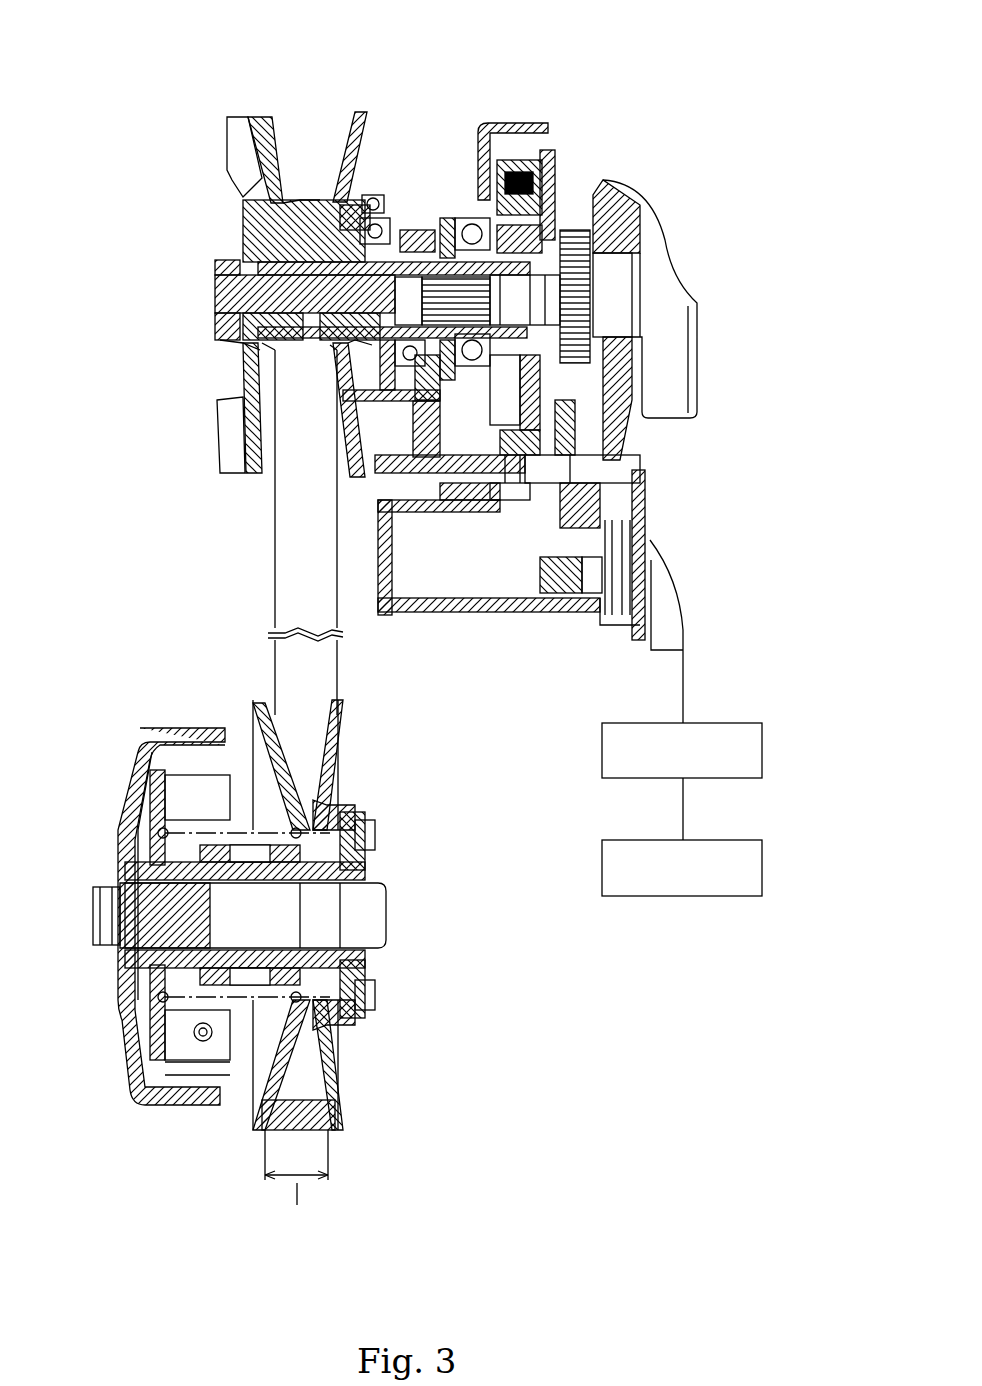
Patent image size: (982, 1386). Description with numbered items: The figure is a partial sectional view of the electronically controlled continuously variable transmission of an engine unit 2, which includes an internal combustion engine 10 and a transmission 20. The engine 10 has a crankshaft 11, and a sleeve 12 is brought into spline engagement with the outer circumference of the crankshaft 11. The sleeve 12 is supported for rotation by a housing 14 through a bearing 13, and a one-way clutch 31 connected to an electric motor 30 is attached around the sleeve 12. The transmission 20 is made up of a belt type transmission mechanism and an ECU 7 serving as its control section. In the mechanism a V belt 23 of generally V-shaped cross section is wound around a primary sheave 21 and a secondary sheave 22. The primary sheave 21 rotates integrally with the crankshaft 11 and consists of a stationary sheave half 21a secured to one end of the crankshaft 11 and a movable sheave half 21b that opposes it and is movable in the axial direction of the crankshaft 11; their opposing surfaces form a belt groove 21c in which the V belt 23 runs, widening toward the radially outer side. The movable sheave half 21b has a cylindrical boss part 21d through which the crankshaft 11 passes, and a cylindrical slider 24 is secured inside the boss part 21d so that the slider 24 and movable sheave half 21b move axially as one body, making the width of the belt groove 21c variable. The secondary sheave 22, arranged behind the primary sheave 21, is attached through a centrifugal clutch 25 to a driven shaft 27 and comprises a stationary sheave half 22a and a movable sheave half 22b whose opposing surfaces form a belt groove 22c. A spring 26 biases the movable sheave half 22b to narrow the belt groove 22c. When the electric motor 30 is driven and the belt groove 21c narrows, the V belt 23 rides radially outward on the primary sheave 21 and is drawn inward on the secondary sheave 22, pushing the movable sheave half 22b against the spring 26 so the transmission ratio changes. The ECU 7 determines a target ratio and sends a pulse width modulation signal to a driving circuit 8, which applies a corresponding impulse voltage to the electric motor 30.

The engine unit 2 is at (585, 70).
The ECU 7 is at (765, 862).
The driving circuit 8 is at (765, 748).
The internal combustion engine 10 is at (700, 345).
The crankshaft 11 is at (668, 268).
The sleeve 12 is at (585, 298).
The bearing 13 is at (487, 123).
The housing 14 is at (393, 548).
The transmission 20 is at (135, 178).
The primary sheave 21 is at (243, 218).
The stationary sheave half 21a is at (262, 178).
The movable sheave half 21b is at (360, 148).
The belt groove 21c is at (288, 192).
The cylindrical boss part 21d is at (376, 195).
The secondary sheave 22 is at (345, 1070).
The stationary sheave half 22a is at (340, 768).
The movable sheave half 22b is at (250, 723).
The belt groove 22c is at (333, 727).
The V belt 23 is at (337, 668).
The cylindrical slider 24 is at (323, 367).
The centrifugal clutch 25 is at (135, 745).
The spring 26 is at (355, 820).
The driven shaft 27 is at (372, 935).
The electric motor 30 is at (645, 575).
The one-way clutch 31 is at (520, 160).